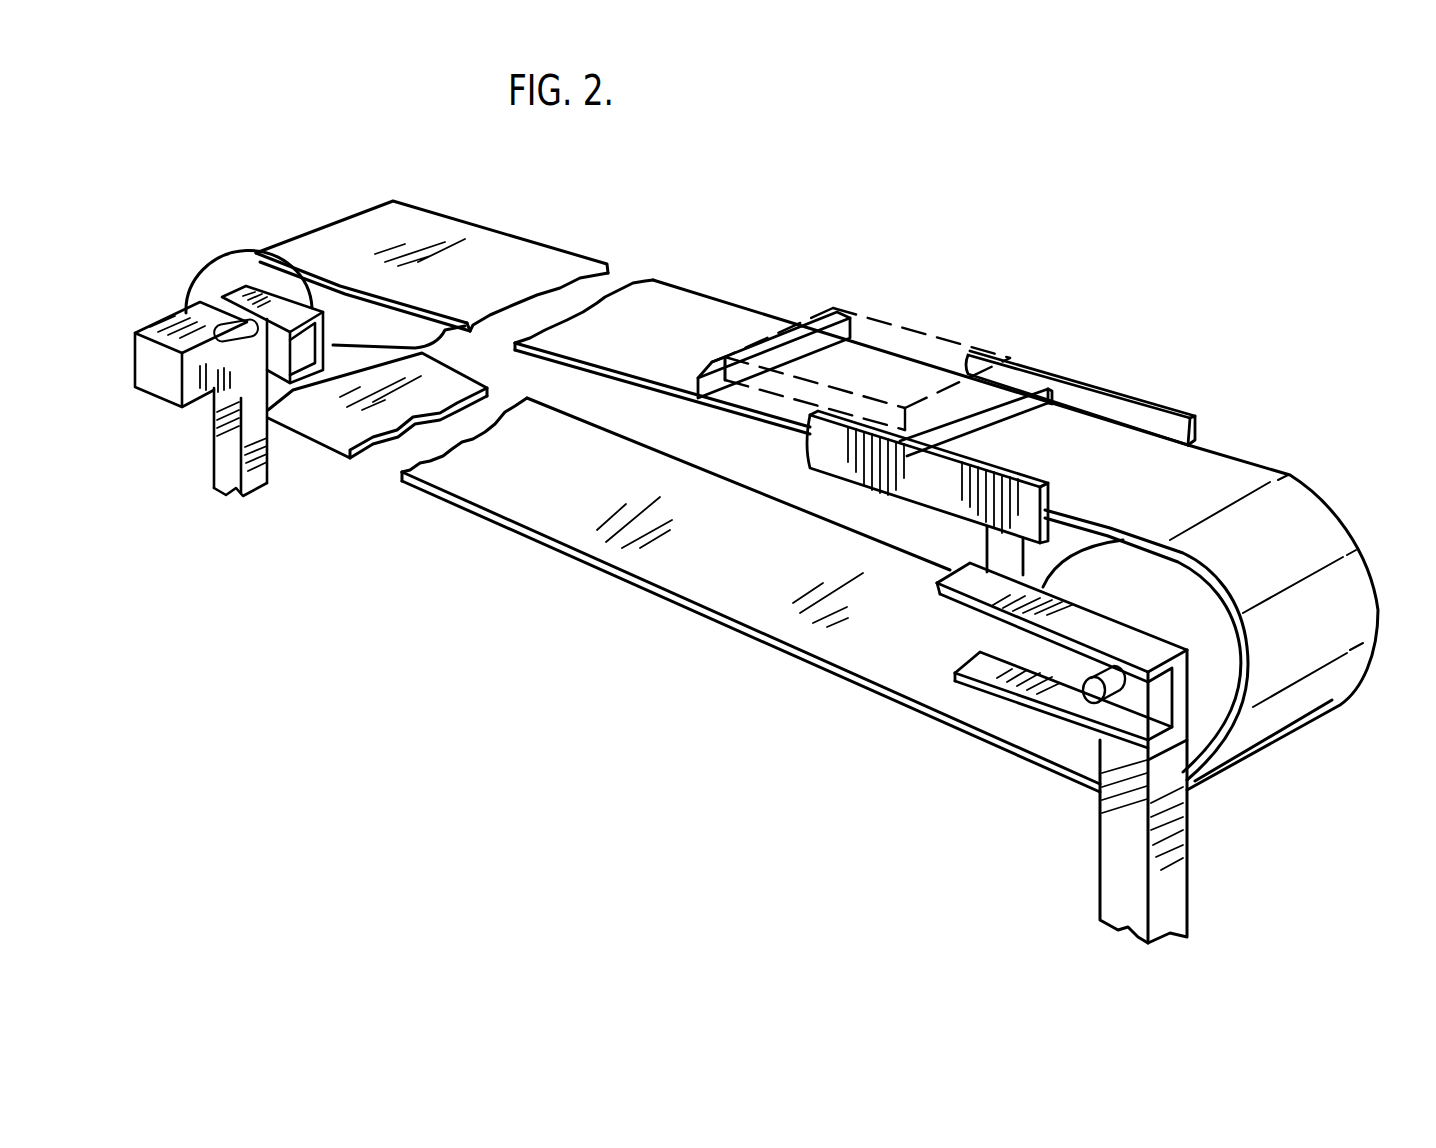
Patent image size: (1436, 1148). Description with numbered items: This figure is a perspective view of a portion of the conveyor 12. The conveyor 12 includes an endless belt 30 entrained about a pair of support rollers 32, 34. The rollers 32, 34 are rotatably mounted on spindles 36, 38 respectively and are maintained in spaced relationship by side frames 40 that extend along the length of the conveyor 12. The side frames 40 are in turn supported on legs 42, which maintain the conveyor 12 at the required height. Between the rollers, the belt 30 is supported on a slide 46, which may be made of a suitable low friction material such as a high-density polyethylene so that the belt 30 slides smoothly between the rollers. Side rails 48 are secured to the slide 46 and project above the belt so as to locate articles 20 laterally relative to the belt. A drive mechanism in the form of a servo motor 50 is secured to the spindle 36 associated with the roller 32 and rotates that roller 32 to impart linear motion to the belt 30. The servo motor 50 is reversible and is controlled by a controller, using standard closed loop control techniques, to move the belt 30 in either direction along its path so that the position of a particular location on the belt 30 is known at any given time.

The conveyor 12 is at (658, 640).
The articles 20 is at (934, 333).
The endless belt 30 is at (598, 377).
The support roller 32 is at (243, 275).
The support roller 34 is at (1213, 687).
The spindle 36 is at (223, 330).
The spindle 38 is at (1090, 700).
The side frames 40 is at (940, 585).
The legs 42 is at (1113, 847).
The slide 46 is at (808, 457).
The side rails 48 is at (1018, 500).
The servo motor 50 is at (162, 388).